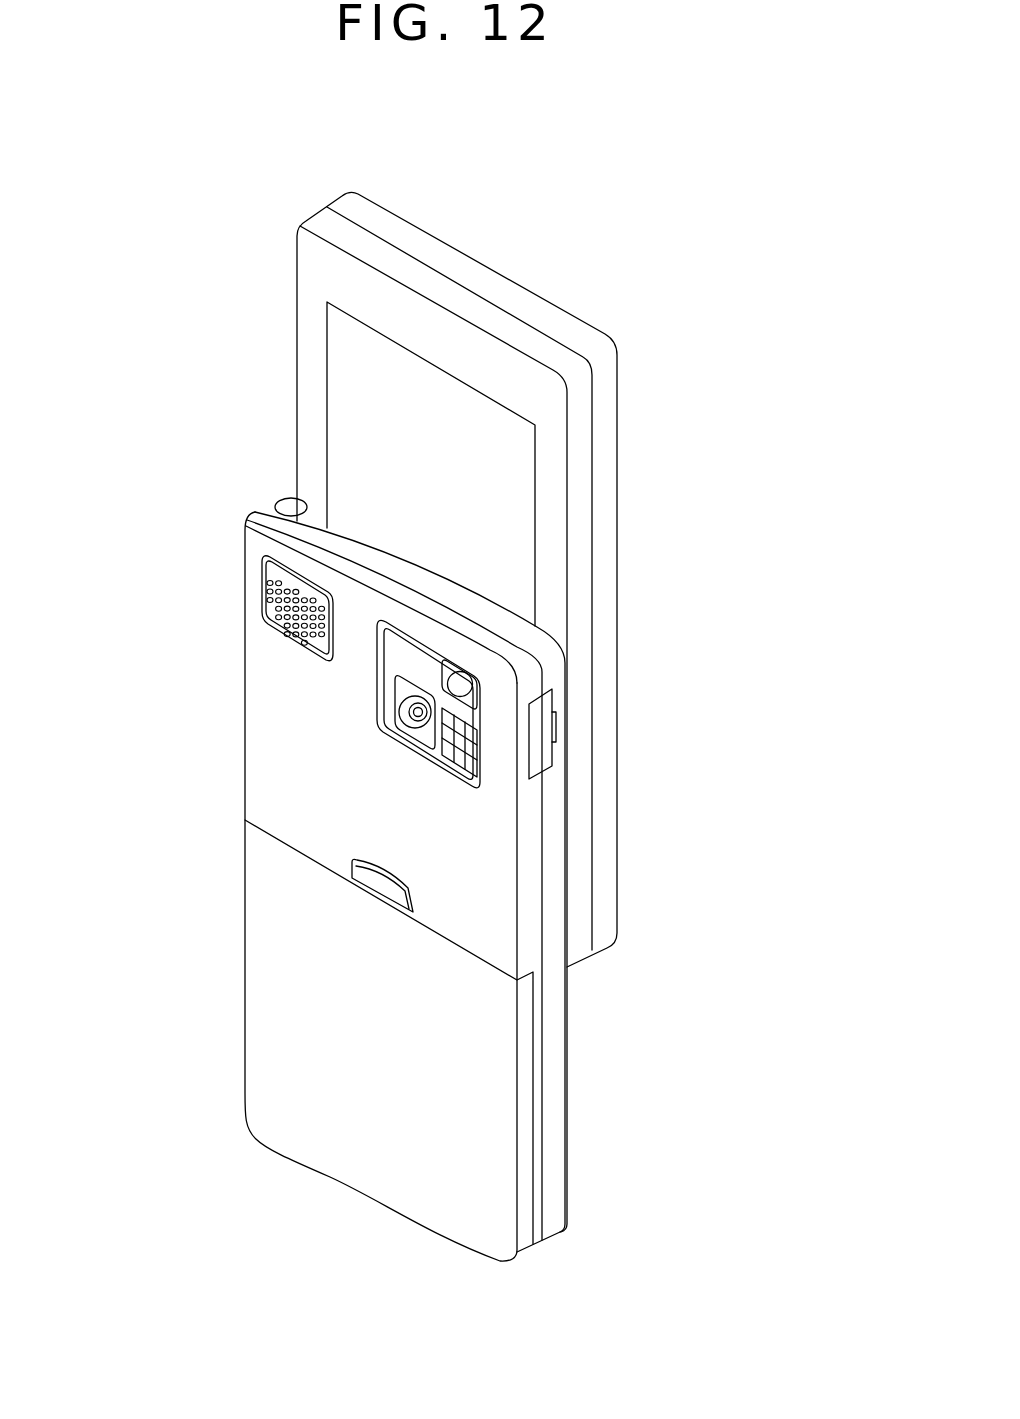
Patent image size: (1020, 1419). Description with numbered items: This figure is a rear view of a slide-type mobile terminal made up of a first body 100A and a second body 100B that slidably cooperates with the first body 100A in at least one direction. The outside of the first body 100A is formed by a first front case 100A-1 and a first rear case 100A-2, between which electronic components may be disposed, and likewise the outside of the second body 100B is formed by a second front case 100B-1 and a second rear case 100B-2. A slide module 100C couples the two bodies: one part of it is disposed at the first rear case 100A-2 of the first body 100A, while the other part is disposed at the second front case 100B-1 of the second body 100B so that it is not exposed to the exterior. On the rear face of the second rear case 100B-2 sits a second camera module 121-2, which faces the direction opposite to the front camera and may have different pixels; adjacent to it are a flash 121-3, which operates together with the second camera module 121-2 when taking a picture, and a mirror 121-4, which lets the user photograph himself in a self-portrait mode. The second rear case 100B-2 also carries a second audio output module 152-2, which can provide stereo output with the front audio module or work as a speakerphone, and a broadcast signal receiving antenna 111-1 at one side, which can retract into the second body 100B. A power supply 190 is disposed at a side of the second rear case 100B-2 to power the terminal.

The first body 100A is at (262, 358).
The first front case 100A-1 is at (340, 202).
The first rear case 100A-2 is at (328, 218).
The slide module 100C is at (378, 445).
The second body 100B is at (212, 718).
The second front case 100B-1 is at (555, 1000).
The second rear case 100B-2 is at (530, 932).
The broadcast signal receiving antenna 111-1 is at (286, 508).
The second audio output module 152-2 is at (273, 600).
The second camera module 121-2 is at (418, 714).
The flash 121-3 is at (460, 748).
The mirror 121-4 is at (460, 685).
The power supply 190 is at (260, 924).